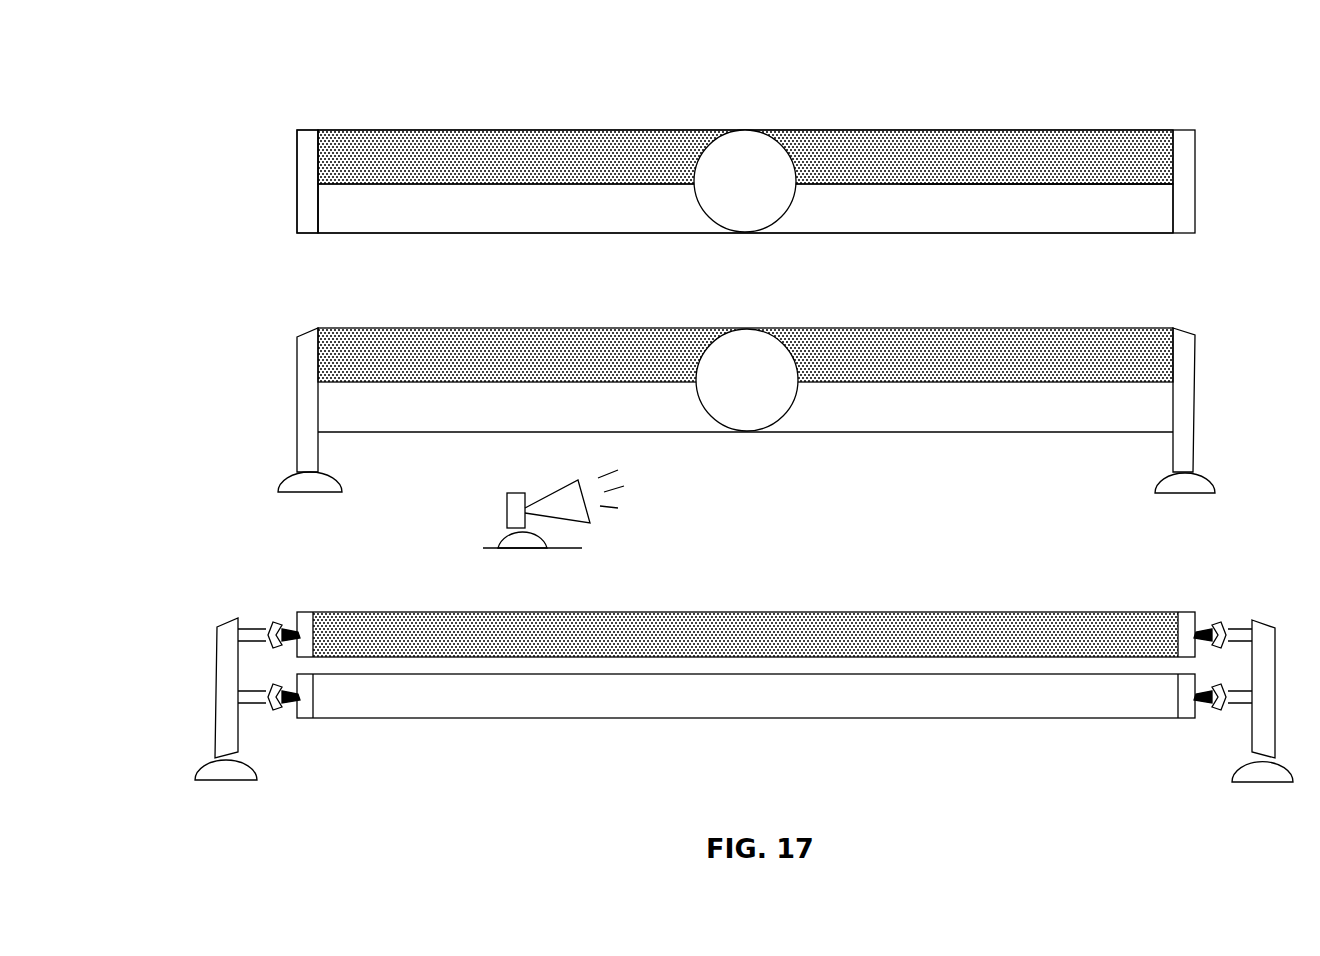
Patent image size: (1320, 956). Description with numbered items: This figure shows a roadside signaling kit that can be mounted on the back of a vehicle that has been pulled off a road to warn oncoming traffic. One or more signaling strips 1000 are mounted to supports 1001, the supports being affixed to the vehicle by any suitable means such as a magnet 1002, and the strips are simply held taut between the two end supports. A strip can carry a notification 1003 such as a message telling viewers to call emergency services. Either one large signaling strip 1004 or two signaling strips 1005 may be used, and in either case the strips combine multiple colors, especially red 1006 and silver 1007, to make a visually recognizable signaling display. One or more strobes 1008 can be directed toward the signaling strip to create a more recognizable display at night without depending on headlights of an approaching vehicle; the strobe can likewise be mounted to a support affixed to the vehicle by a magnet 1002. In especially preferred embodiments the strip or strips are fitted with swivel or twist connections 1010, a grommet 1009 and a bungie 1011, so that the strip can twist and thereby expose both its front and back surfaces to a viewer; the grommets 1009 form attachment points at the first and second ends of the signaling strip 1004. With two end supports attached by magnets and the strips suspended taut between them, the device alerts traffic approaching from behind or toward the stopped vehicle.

The signaling strips 1000 is at (802, 174).
The supports 1001 is at (297, 457).
The magnet 1002 is at (305, 148).
The notification 1003 is at (762, 331).
The large signaling strip 1004 is at (397, 128).
The two signaling strips 1005 is at (1037, 734).
The red 1006 is at (980, 147).
The silver 1007 is at (1012, 217).
The strobe 1008 is at (660, 502).
The grommet 1009 is at (312, 638).
The swivel or twist connections 1010 is at (291, 632).
The bungie 1011 is at (256, 624).